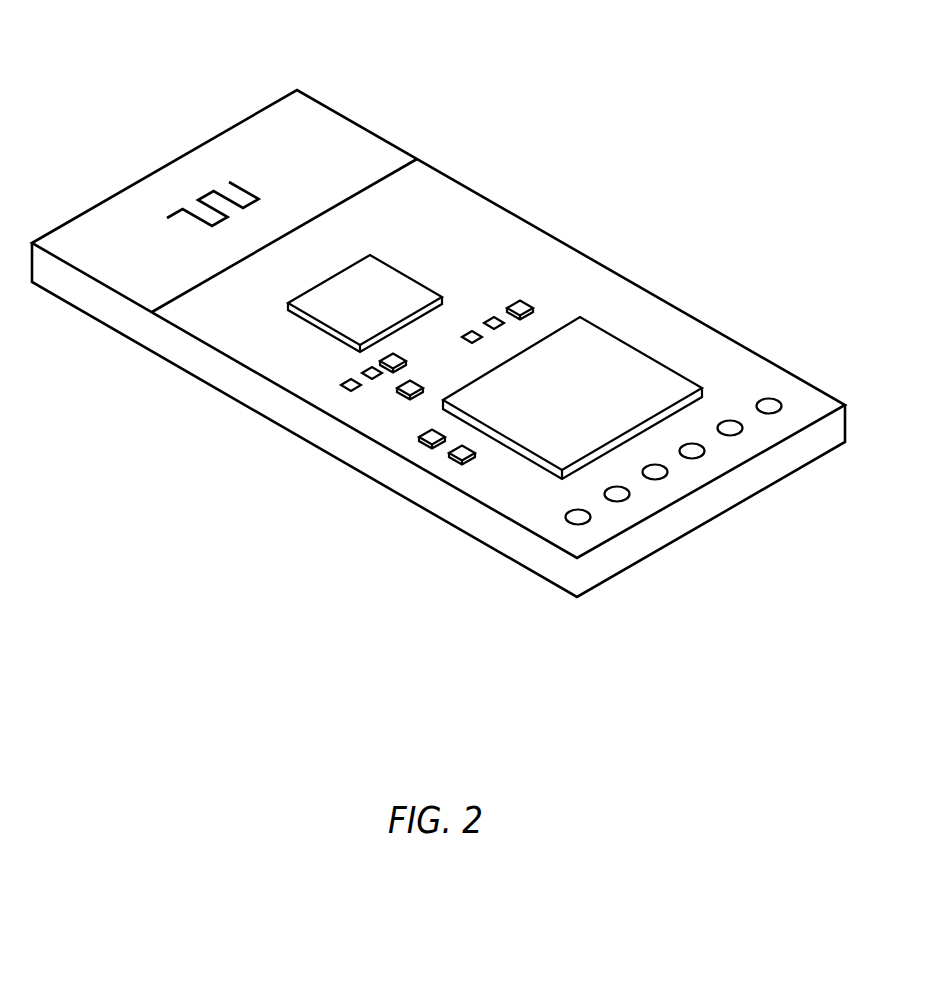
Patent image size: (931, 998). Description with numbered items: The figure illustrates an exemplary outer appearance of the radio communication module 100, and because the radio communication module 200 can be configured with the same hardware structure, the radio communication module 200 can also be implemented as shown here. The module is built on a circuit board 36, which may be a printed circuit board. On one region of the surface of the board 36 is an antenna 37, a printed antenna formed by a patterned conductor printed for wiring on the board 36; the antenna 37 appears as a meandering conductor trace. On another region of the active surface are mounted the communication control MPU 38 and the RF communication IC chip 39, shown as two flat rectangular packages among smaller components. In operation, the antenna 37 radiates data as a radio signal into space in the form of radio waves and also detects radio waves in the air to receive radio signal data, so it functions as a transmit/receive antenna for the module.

The radio communication module 100 is at (427, 713).
The radio communication module 200 is at (488, 713).
The circuit board 36 is at (147, 330).
The antenna 37 is at (247, 183).
The communication control MPU 38 is at (585, 382).
The RF communication IC chip 39 is at (380, 293).